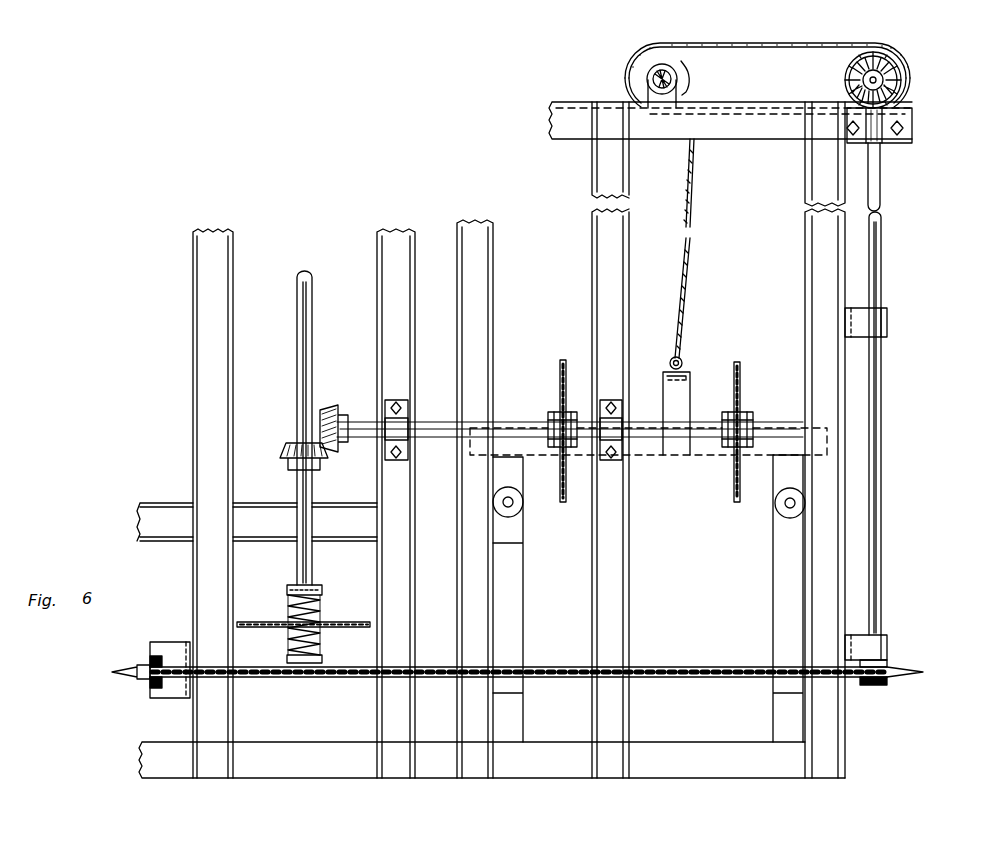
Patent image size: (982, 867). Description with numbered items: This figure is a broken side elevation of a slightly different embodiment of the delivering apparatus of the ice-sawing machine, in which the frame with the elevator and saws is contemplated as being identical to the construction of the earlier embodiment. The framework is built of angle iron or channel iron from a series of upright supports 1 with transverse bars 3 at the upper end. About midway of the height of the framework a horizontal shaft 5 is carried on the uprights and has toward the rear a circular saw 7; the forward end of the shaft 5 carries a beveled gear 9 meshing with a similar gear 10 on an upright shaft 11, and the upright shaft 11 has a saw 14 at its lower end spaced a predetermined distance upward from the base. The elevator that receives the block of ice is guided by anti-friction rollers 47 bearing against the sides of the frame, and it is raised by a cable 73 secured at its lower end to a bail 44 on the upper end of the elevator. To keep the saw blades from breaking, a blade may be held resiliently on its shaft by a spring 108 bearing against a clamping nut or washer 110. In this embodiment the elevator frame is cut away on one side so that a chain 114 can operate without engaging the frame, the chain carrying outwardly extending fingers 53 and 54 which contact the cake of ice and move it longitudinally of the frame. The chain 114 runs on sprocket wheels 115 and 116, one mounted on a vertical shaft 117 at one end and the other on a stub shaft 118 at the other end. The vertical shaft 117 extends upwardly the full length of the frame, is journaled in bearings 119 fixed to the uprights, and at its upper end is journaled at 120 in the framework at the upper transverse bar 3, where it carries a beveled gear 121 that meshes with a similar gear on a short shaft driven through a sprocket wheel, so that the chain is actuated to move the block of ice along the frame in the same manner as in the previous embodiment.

The upright supports 1 is at (215, 267).
The transverse bars at the upper end 3 is at (767, 133).
The horizontal shafts 5 is at (701, 430).
The circular saw 7 is at (744, 381).
The beveled gear 9 is at (340, 410).
The gear on upright shaft 10 is at (283, 449).
The upright shaft 11 is at (297, 391).
The saw 14 is at (352, 628).
The bail 44 is at (690, 386).
The anti-friction rollers 47 is at (776, 506).
The outwardly extending arm 53 is at (923, 672).
The outwardly extending arm 54 is at (112, 673).
The cable 73 is at (690, 264).
The spring 108 is at (323, 614).
The clamping nut or washer 110 is at (323, 591).
The chain 114 is at (729, 666).
The sprocket wheel 115 is at (885, 686).
The sprocket wheel 116 is at (150, 660).
The vertical shaft 117 is at (881, 606).
The stub shaft 118 is at (160, 657).
The bearings 119 is at (887, 321).
The journal 120 is at (883, 141).
The beveled gear 121 is at (905, 93).